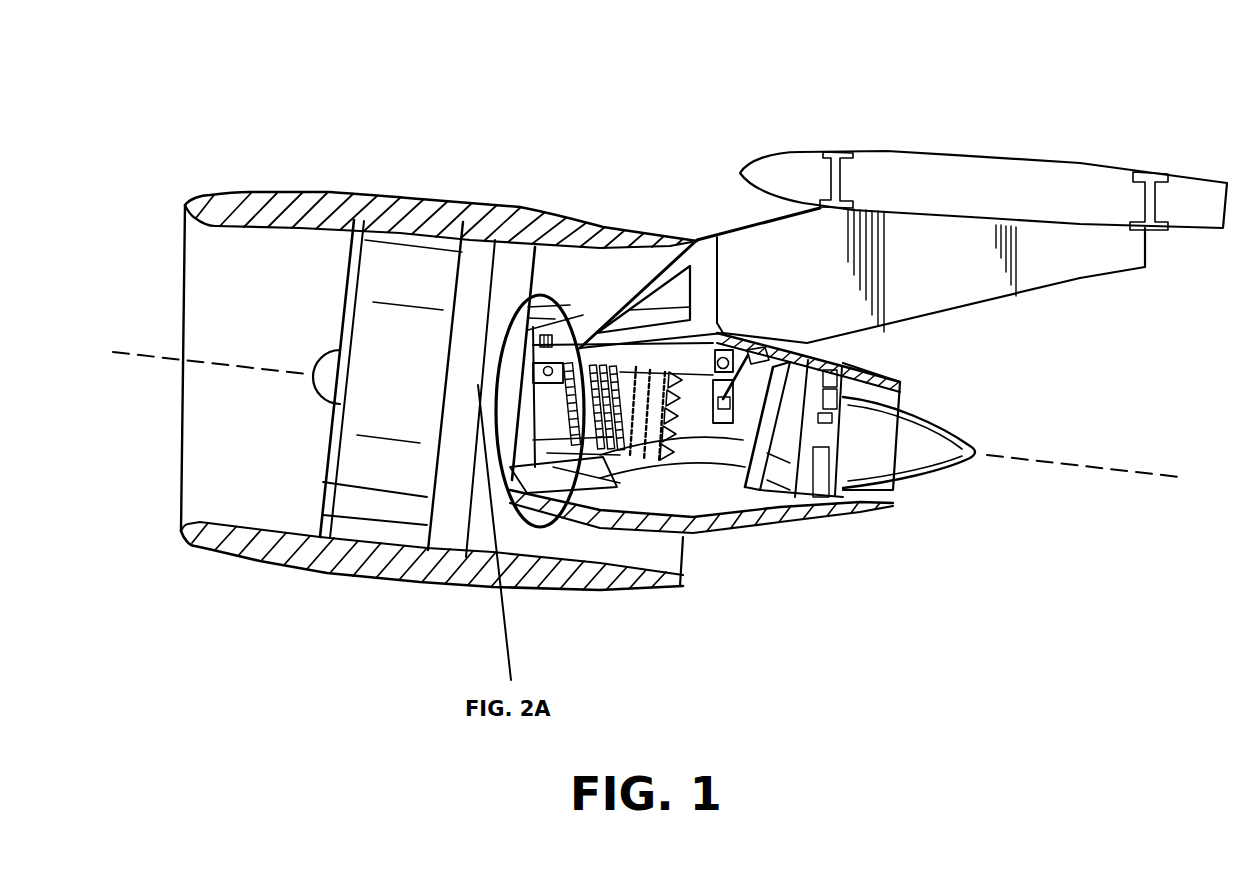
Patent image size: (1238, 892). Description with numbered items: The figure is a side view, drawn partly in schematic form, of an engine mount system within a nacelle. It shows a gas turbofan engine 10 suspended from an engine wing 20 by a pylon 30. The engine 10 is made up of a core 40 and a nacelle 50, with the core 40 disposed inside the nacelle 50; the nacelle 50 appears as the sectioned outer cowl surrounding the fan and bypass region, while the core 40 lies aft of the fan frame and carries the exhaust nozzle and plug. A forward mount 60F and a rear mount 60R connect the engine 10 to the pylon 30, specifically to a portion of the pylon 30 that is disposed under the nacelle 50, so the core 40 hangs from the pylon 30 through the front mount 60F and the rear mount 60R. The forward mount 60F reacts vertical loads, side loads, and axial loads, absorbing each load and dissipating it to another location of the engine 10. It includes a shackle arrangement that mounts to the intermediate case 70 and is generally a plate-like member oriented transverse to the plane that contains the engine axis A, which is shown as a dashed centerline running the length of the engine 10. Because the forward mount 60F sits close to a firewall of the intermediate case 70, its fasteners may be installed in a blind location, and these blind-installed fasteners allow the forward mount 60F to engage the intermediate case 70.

The gas turbofan engine 10 is at (318, 142).
The engine wing 20 is at (1006, 157).
The pylon 30 is at (768, 243).
The core 40 is at (679, 473).
The nacelle 50 is at (361, 596).
The forward mount 60F is at (548, 325).
The rear mount 60R is at (733, 400).
The intermediate case 70 is at (503, 462).
The engine axis A is at (131, 352).